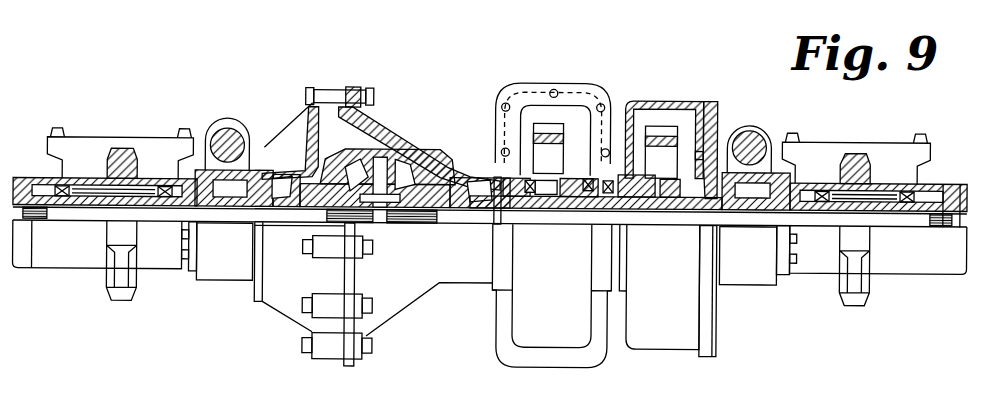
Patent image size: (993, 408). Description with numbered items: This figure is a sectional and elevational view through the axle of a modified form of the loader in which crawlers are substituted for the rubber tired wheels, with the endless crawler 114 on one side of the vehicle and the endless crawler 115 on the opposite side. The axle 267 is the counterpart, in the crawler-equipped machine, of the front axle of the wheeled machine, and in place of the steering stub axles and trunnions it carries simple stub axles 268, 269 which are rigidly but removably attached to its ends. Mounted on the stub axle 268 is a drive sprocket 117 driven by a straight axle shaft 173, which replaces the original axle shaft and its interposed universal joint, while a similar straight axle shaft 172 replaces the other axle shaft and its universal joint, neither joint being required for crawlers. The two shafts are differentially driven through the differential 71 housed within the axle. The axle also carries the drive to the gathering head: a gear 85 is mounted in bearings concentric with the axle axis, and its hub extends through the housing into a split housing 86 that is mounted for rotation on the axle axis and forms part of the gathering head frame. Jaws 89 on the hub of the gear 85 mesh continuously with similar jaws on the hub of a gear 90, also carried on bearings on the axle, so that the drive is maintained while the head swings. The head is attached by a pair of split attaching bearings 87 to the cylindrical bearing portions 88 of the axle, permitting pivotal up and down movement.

The endless crawler 114 is at (80, 143).
The endless crawler 115 is at (893, 145).
The drive sprocket 117 is at (122, 156).
The split attaching bearing 87 is at (232, 126).
The cylindrical bearing portion 88 is at (488, 253).
The differential 71 is at (377, 148).
The axle 267 is at (404, 138).
The gear 90 is at (540, 127).
The split housing 86 is at (572, 107).
The jaws 89 is at (586, 187).
The gear 85 is at (662, 126).
The stub axle 268 is at (93, 207).
The stub axle 269 is at (890, 207).
The straight axle shaft 173 is at (168, 219).
The straight axle shaft 172 is at (483, 211).